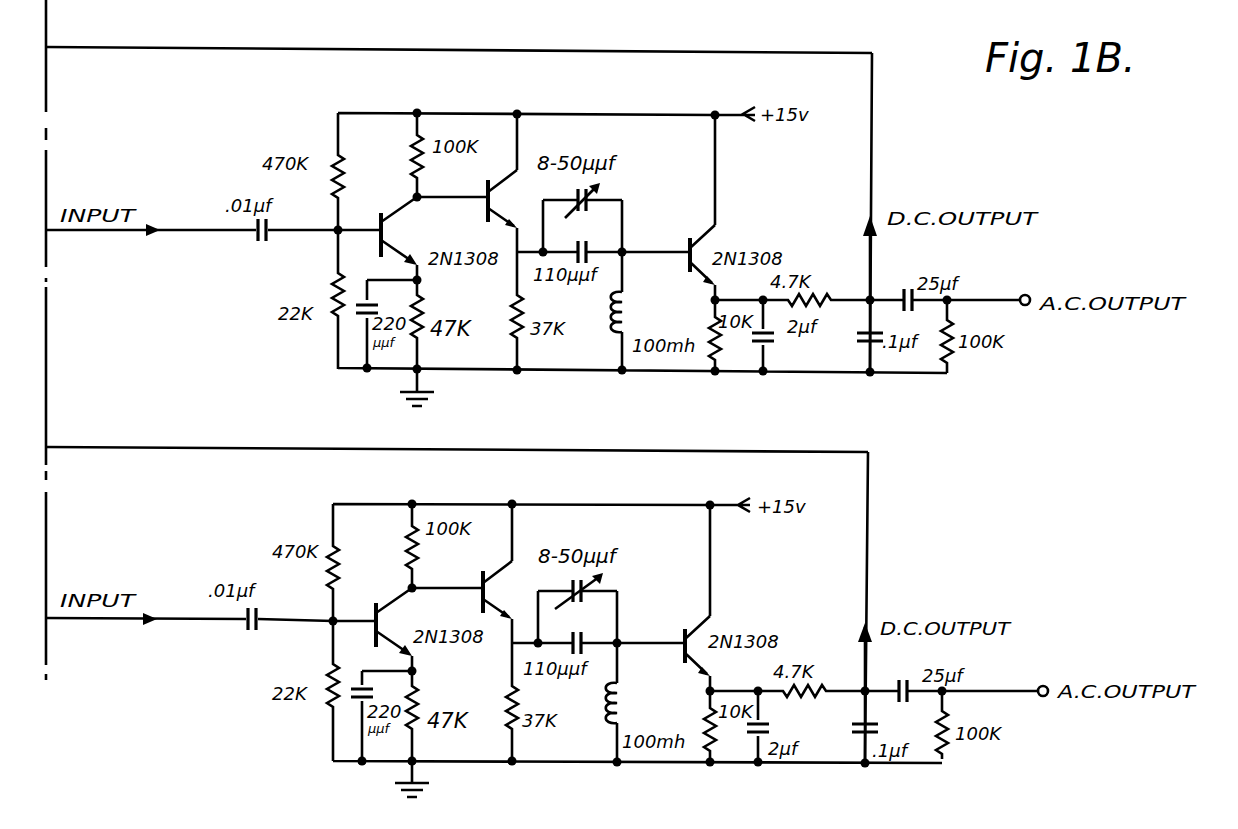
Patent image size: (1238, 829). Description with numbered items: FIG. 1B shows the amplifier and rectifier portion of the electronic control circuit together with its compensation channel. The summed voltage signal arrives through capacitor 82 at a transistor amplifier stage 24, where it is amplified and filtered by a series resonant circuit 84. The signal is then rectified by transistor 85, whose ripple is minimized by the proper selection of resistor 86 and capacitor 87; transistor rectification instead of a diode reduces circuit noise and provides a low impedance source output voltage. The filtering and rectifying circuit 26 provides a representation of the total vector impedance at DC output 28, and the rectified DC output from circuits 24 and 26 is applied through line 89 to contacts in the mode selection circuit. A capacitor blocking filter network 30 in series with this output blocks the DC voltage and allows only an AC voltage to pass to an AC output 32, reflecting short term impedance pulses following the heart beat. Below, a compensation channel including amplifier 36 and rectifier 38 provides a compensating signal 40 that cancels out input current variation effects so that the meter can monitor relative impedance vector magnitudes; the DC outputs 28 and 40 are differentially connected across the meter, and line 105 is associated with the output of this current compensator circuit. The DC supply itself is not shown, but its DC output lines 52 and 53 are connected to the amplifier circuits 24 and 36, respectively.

The line 89 is at (238, 48).
The line 105 is at (222, 449).
The DC output line 52 is at (715, 113).
The DC output line 53 is at (738, 486).
The capacitor 82 is at (258, 262).
The transistor amplifier stage 24 is at (345, 384).
The series resonant circuit 84 is at (593, 340).
The transistor 85 is at (702, 232).
The resistor 86 is at (712, 325).
The capacitor 87 is at (770, 348).
The circuit 26 is at (803, 246).
The DC output 28 is at (872, 293).
The capacitor blocking filter network 30 is at (903, 383).
The AC output 32 is at (1003, 298).
The amplifier 36 is at (354, 741).
The rectifier 38 is at (729, 762).
The compensating signal 40 is at (888, 693).